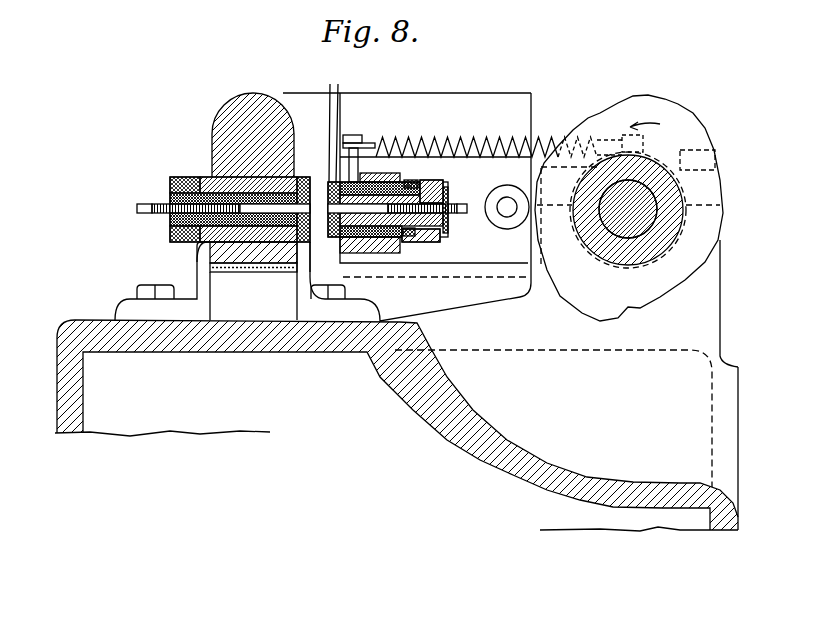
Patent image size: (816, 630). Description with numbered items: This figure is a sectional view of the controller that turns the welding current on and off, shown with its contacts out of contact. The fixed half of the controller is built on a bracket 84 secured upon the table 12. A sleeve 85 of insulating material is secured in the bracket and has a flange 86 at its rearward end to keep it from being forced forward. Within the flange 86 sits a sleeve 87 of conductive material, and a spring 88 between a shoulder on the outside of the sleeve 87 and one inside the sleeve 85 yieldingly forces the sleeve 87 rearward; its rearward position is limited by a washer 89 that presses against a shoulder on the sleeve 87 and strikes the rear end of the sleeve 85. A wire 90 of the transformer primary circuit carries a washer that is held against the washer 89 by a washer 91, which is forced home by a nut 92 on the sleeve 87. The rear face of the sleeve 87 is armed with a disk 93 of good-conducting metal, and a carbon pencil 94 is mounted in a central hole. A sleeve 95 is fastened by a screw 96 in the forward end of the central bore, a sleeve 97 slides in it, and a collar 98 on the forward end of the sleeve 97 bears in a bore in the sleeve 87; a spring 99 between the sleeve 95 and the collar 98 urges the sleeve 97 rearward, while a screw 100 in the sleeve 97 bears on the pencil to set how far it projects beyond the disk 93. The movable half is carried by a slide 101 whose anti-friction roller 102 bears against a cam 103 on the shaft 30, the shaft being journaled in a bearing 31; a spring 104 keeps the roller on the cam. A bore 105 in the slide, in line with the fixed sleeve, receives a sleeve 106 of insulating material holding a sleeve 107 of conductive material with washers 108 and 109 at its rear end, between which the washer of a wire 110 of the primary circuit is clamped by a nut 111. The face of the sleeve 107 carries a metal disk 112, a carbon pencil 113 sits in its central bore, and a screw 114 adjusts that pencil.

The table 12 is at (60, 410).
The shaft 30 is at (657, 190).
The bearing 31 is at (700, 207).
The bracket 84 is at (205, 303).
The sleeve of insulating material 85 is at (210, 247).
The flange 86 is at (282, 262).
The sleeve of conductive material 87 is at (300, 248).
The spring 88 is at (245, 262).
The washer 89 is at (204, 177).
The wire of the primary circuit 90 is at (197, 250).
The washer 91 is at (200, 187).
The nut 92 is at (170, 179).
The disk 93 is at (318, 240).
The carbon pencil 94 is at (303, 214).
The sleeve 95 is at (170, 194).
The screw 96 is at (168, 228).
The sleeve 97 is at (176, 205).
The collar 98 is at (282, 93).
The spring 99 is at (265, 270).
The screw 100 is at (170, 220).
The slide 101 is at (341, 265).
The anti-friction roller 102 is at (510, 226).
The cam 103 is at (637, 307).
The spring 104 is at (423, 140).
The bore 105 is at (388, 173).
The sleeve of insulating material 106 is at (354, 140).
The sleeve of conductive material 107 is at (350, 254).
The washer 108 is at (420, 179).
The washer 109 is at (428, 188).
The wire of the primary circuit 110 is at (410, 236).
The nut 111 is at (416, 232).
The disk 112 is at (345, 123).
The carbon pencil 113 is at (377, 240).
The screw 114 is at (449, 207).